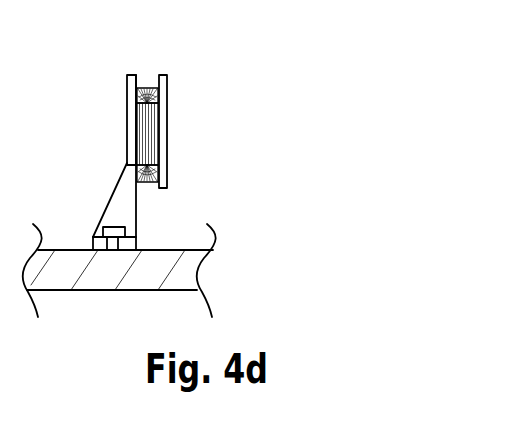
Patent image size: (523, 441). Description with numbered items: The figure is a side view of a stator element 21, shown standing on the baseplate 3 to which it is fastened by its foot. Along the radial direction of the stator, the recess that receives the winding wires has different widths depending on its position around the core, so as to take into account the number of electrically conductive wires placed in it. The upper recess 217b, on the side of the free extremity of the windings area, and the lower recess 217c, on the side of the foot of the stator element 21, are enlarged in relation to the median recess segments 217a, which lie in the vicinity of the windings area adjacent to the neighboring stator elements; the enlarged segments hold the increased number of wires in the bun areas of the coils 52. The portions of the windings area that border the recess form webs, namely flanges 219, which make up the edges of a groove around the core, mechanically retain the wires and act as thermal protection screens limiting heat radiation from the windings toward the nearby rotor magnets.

The baseplate 3 is at (73, 283).
The stator element 21 is at (111, 160).
The coils 52 is at (148, 88).
The flanges 219 is at (127, 88).
The median recess segments 217a is at (152, 136).
The upper recess 217b is at (153, 82).
The lower recess 217c is at (140, 184).